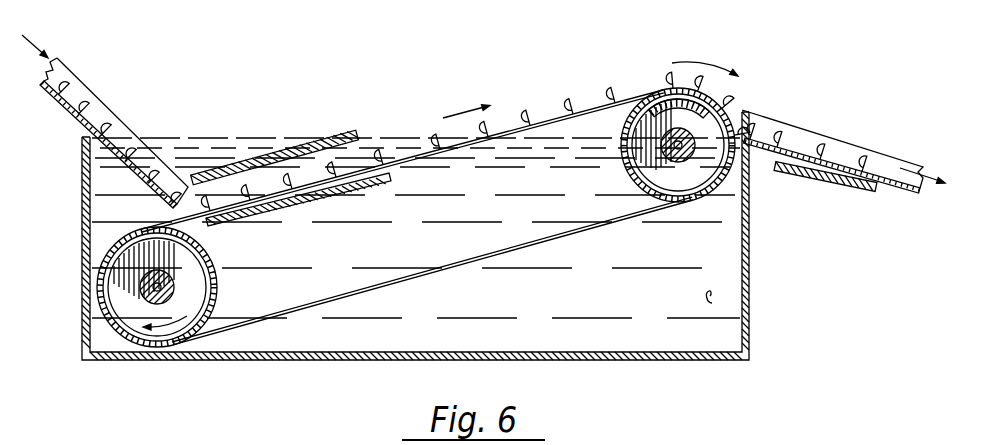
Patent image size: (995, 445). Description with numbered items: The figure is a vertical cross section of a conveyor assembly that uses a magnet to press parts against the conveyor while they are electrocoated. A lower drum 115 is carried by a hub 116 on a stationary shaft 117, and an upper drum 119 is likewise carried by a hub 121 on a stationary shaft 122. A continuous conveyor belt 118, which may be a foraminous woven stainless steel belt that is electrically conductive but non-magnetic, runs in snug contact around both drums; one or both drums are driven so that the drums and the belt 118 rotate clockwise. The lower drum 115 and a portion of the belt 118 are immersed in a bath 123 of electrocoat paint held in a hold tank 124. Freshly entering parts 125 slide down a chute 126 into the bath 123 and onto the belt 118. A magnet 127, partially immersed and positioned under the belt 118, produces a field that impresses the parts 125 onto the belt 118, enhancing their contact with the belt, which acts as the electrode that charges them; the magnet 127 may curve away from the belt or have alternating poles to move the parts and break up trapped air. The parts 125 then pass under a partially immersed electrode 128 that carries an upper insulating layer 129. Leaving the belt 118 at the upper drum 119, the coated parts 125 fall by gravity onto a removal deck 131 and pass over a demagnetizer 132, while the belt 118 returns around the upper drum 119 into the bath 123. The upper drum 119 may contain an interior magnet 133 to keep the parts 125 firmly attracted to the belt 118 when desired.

The lower drum 115 is at (217, 305).
The hub 116 is at (170, 272).
The stationary shaft 117 is at (170, 287).
The conveyor belt 118 is at (405, 283).
The upper drum 119 is at (632, 178).
The hub 121 is at (692, 160).
The stationary shaft 122 is at (673, 158).
The bath 123 is at (712, 303).
The hold tank 124 is at (749, 253).
The parts 125 is at (128, 160).
The chute 126 is at (72, 110).
The magnet 127 is at (320, 198).
The electrode 128 is at (303, 167).
The upper insulating layer 129 is at (345, 140).
The removal deck 131 is at (842, 158).
The demagnetizer 132 is at (830, 188).
The interior magnet 133 is at (703, 113).